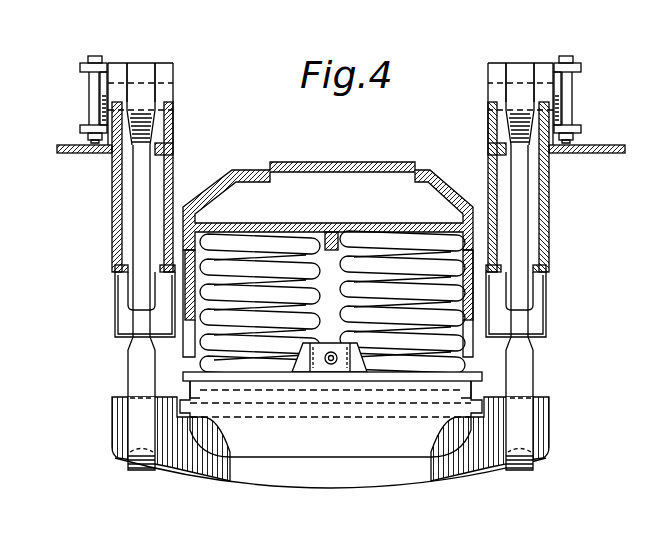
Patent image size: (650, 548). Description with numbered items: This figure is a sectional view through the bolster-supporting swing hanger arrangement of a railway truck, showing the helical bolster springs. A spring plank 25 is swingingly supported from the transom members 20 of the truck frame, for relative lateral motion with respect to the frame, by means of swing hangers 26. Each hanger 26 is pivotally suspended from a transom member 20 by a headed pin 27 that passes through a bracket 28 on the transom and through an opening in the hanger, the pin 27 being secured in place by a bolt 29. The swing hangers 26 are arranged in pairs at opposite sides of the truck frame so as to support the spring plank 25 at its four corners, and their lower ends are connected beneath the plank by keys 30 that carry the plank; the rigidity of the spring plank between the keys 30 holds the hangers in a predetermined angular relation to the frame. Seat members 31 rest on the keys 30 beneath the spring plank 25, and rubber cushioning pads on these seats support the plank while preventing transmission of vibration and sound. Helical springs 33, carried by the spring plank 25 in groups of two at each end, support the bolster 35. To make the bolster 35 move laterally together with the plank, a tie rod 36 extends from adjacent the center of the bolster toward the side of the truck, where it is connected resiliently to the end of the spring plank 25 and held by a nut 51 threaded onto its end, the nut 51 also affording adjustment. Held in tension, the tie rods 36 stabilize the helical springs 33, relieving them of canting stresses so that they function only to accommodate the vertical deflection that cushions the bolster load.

The transom member 20 is at (113, 226).
The spring plank 25 is at (216, 455).
The swing hanger 26 is at (140, 373).
The headed pin 27 is at (102, 93).
The bracket 28 is at (167, 66).
The bolt 29 is at (88, 57).
The key 30 is at (460, 467).
The seat member 31 is at (447, 415).
The helical spring 33 is at (367, 240).
The bolster 35 is at (336, 163).
The tie rod 36 is at (327, 363).
The nut 51 is at (337, 364).